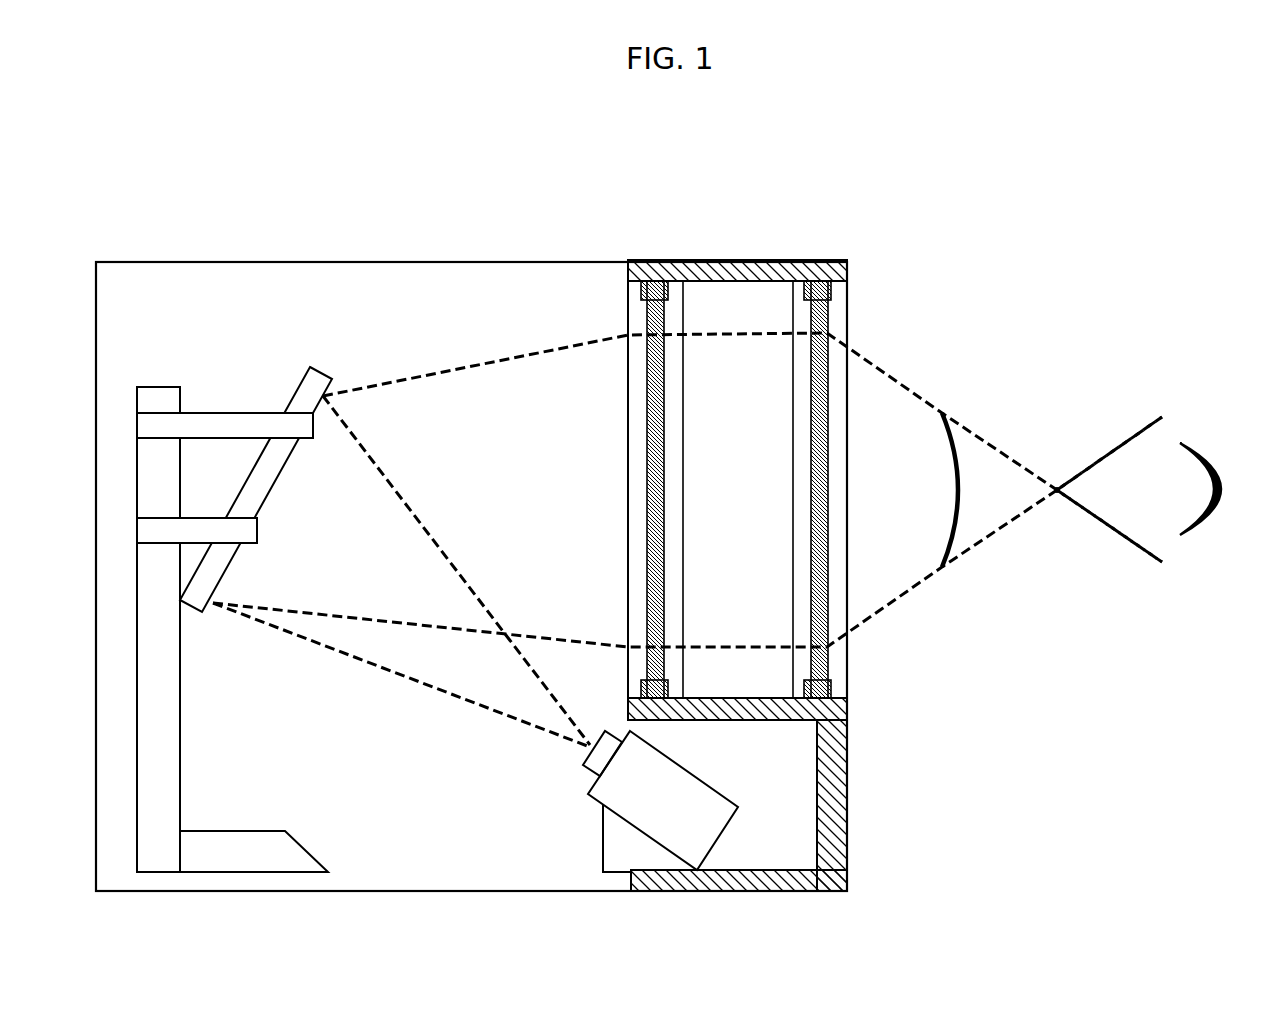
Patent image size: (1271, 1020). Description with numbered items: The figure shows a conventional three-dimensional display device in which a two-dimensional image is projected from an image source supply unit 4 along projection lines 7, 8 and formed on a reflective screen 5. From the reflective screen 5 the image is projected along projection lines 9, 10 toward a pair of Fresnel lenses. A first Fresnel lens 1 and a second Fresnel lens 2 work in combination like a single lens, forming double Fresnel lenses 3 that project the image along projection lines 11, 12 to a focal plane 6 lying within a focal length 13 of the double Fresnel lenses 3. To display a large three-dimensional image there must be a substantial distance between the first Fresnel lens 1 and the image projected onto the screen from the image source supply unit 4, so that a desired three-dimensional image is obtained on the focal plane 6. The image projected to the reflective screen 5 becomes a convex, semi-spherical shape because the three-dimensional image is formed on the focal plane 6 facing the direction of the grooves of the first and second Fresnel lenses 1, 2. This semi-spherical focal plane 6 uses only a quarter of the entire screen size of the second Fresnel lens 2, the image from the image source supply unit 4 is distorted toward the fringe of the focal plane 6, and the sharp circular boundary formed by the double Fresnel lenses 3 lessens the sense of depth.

The first Fresnel lens 1 is at (664, 480).
The second Fresnel lens 2 is at (828, 490).
The double Fresnel lenses 3 is at (749, 544).
The image source supply unit 4 is at (590, 793).
The reflective screen 5 is at (272, 493).
The focal plane 6 is at (950, 555).
The projection line 7 is at (348, 655).
The projection line 8 is at (470, 585).
The projection line 9 is at (309, 608).
The projection line 10 is at (394, 380).
The projection line 11 is at (1115, 450).
The projection line 12 is at (1115, 530).
The focal length 13 is at (1057, 488).